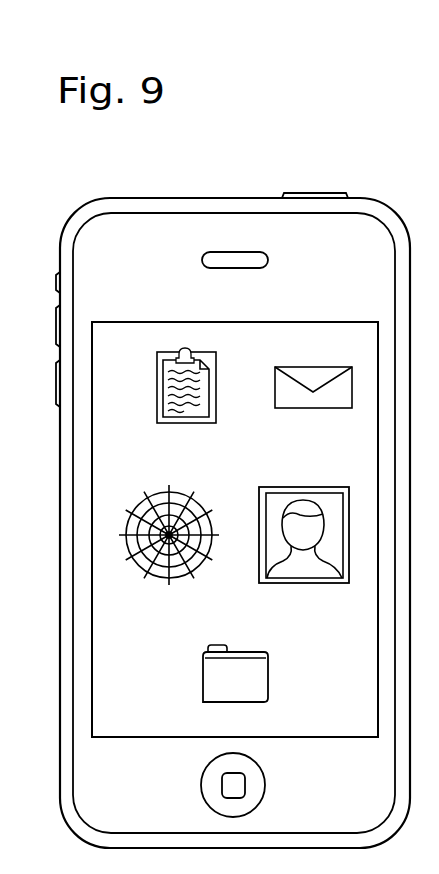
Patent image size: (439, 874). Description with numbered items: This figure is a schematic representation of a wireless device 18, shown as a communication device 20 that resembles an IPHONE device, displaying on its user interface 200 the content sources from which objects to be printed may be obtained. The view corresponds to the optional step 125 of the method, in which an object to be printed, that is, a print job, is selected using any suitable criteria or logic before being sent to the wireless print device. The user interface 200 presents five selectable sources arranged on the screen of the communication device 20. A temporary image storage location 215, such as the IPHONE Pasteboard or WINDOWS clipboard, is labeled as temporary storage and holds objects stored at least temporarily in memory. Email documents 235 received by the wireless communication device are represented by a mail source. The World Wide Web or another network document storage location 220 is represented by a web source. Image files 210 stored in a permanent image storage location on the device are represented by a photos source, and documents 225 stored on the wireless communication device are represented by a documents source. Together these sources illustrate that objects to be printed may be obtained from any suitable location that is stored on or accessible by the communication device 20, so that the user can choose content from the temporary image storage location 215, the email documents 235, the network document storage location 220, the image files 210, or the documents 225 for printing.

The wireless device 18 is at (372, 105).
The communication device 20 is at (414, 114).
The step of selecting an object to be printed 125 is at (333, 171).
The user interface 200 is at (387, 145).
The temporary image storage location 215 is at (158, 373).
The email documents 235 is at (303, 378).
The network document storage location 220 is at (180, 492).
The image files 210 is at (290, 488).
The documents 225 is at (215, 682).